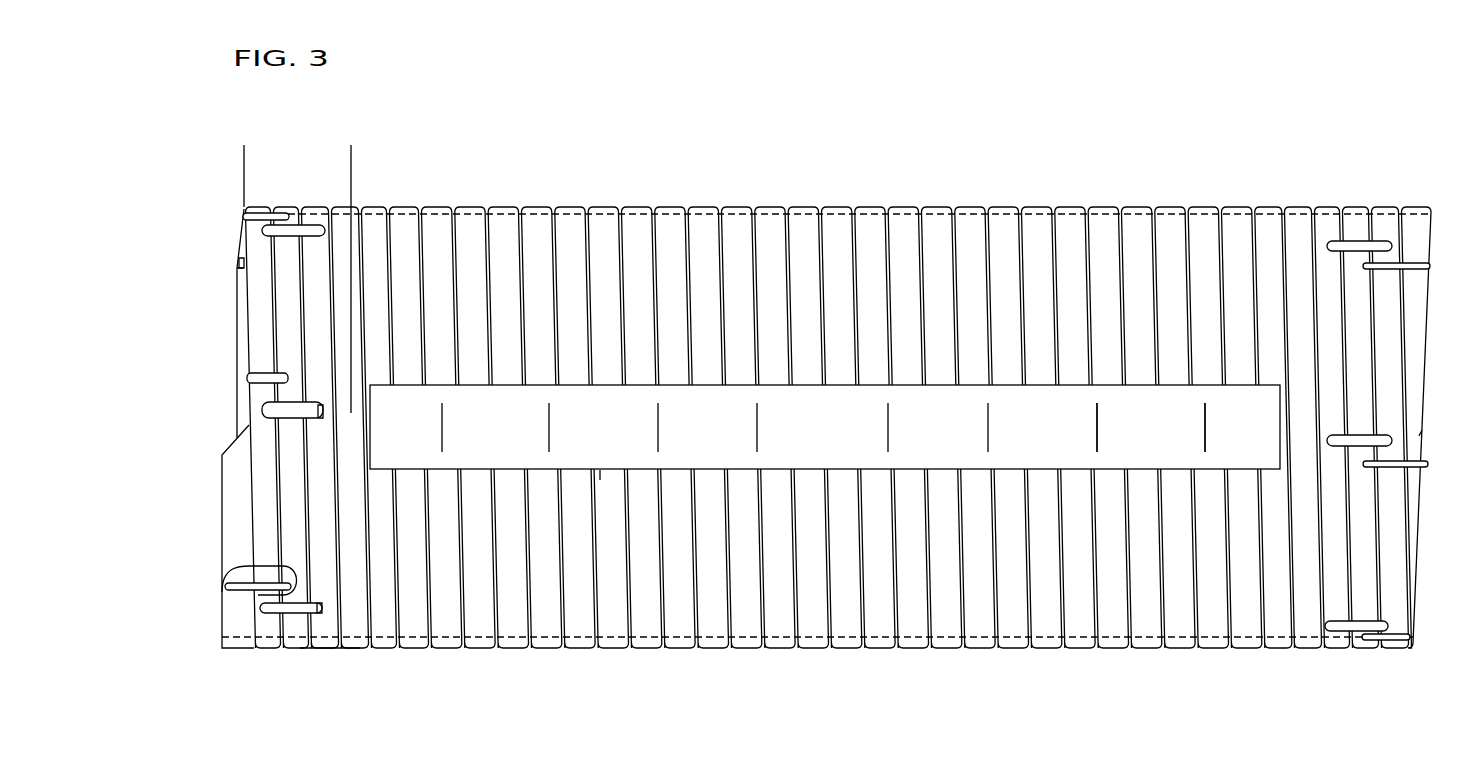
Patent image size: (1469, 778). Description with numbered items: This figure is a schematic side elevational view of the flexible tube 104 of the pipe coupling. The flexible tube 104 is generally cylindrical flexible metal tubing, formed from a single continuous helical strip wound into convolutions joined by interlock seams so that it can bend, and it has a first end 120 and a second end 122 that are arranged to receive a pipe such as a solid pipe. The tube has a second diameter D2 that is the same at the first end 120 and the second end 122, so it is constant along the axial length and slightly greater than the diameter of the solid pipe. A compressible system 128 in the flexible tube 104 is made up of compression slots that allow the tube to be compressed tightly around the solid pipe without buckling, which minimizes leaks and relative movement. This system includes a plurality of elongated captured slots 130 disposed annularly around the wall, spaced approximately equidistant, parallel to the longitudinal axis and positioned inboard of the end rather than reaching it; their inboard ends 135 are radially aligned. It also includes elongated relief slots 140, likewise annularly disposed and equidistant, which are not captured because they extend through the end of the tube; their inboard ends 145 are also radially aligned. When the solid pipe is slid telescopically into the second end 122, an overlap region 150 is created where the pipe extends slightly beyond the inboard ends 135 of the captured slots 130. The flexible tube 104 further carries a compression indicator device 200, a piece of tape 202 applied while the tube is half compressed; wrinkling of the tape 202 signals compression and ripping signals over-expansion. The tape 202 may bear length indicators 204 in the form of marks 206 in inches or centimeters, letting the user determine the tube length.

The flexible tube 104 is at (1180, 650).
The first end 120 is at (222, 550).
The second end 122 is at (1415, 553).
The compressible system 128 is at (330, 655).
The captured slots 130 is at (268, 230).
The inboard ends of the captured slots 135 is at (322, 610).
The relief slots 140 is at (250, 216).
The inboard ends of the relief slots 145 is at (262, 400).
The overlap region 150 is at (351, 177).
The compression indicator device 200 is at (610, 500).
The tape 202 is at (816, 444).
The length indicators 204 is at (1208, 388).
The marks 206 is at (1097, 403).
The second diameter D2 is at (393, 212).